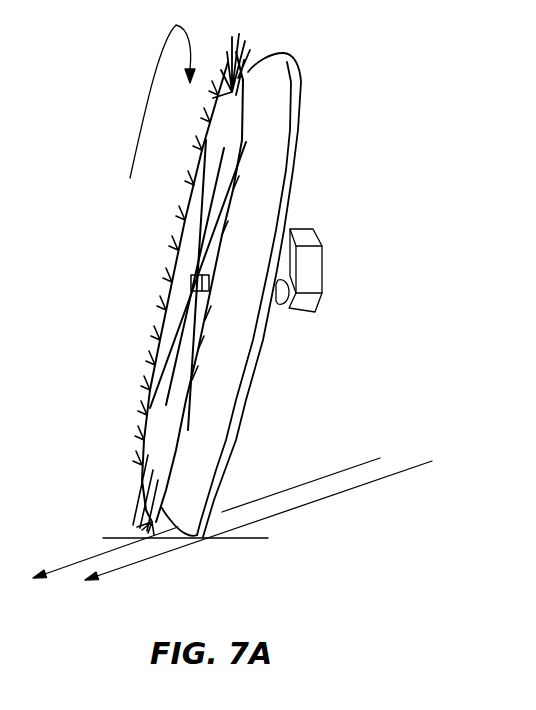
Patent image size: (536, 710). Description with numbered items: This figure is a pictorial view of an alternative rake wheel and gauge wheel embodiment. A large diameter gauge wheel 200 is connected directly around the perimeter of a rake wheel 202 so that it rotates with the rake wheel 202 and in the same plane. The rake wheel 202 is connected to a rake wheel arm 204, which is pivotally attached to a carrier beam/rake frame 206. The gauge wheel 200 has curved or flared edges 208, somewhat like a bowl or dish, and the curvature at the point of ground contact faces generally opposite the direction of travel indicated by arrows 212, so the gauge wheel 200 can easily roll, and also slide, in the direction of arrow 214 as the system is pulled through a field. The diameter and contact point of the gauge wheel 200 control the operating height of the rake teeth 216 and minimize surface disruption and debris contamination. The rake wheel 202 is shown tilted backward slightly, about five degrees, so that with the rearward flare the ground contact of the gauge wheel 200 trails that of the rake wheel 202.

The large diameter gauge wheel 200 is at (296, 148).
The rake wheel 202 is at (185, 221).
The rake wheel arm 204 is at (283, 306).
The carrier beam/rake frame 206 is at (310, 241).
The curved or flared edges 208 is at (237, 370).
The arrows indicating direction of travel 212 is at (147, 559).
The arrow indicating rolling direction 214 is at (147, 92).
The rake teeth 216 is at (245, 48).